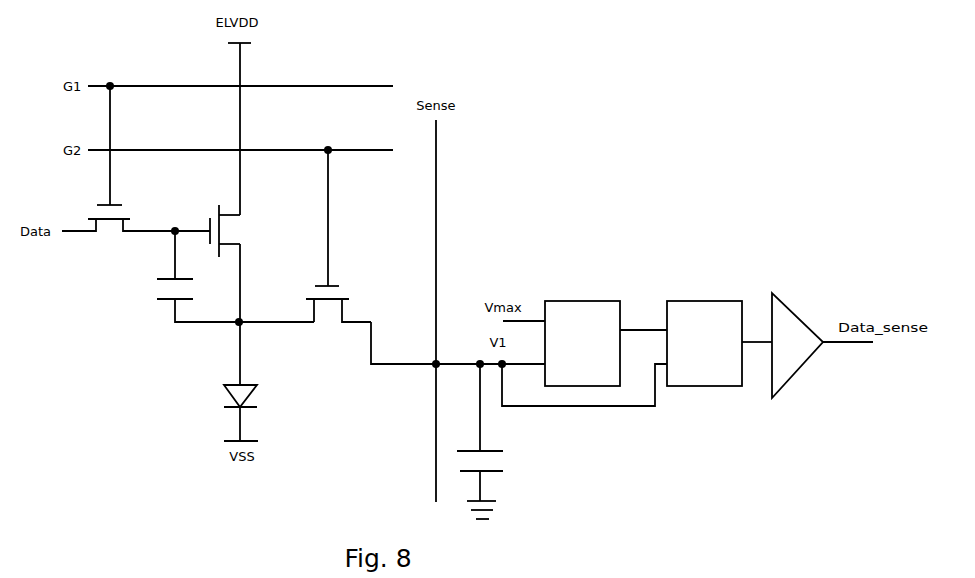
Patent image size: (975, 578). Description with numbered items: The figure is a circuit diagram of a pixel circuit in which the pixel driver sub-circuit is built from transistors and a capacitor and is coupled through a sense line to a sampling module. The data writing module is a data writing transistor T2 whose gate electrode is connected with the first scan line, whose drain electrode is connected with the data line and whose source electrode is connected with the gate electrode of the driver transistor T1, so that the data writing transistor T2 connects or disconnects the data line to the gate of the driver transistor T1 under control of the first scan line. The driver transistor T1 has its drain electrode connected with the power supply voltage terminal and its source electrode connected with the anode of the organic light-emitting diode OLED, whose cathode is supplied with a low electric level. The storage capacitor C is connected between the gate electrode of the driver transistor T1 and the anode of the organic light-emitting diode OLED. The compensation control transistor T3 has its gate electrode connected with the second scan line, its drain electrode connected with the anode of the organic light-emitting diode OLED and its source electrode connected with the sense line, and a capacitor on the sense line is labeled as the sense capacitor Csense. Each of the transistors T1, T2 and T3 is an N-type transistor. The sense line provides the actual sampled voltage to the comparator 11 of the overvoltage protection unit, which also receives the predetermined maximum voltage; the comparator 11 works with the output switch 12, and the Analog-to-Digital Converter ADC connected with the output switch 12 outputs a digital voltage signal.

The comparator 11 is at (588, 301).
The output switch 12 is at (698, 301).
The driver transistor T1 is at (233, 231).
The data writing transistor T2 is at (96, 172).
The compensation control transistor T3 is at (328, 236).
The storage capacitor C is at (226, 276).
The organic light-emitting diode OLED is at (221, 413).
The capacitor on the sense line Csense is at (508, 441).
The Analog-to-Digital Converter ADC is at (797, 345).